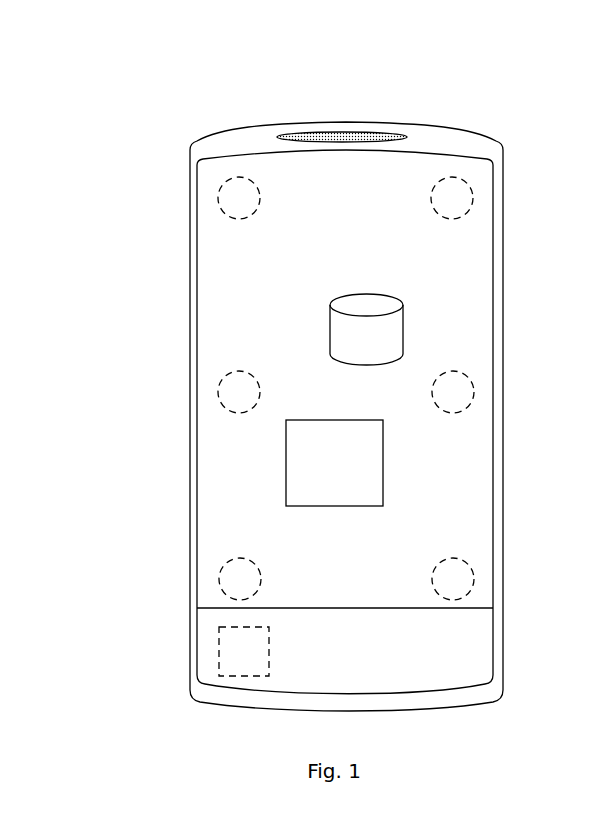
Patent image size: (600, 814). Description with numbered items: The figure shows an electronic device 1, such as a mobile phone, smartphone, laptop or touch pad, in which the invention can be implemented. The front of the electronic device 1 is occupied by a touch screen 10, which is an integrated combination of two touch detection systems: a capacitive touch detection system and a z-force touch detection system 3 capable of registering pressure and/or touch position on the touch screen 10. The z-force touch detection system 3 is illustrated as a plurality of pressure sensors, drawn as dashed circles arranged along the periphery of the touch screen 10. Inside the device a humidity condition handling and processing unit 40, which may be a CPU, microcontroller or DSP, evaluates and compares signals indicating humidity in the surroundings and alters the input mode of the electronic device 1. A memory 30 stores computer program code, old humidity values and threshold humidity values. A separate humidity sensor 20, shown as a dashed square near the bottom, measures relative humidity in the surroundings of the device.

The electronic device 1 is at (299, 95).
The z-force touch detection system 3 is at (238, 177).
The touch screen 10 is at (240, 322).
The humidity sensor 20 is at (219, 652).
The memory 30 is at (366, 329).
The humidity condition handling and processing unit 40 is at (334, 463).